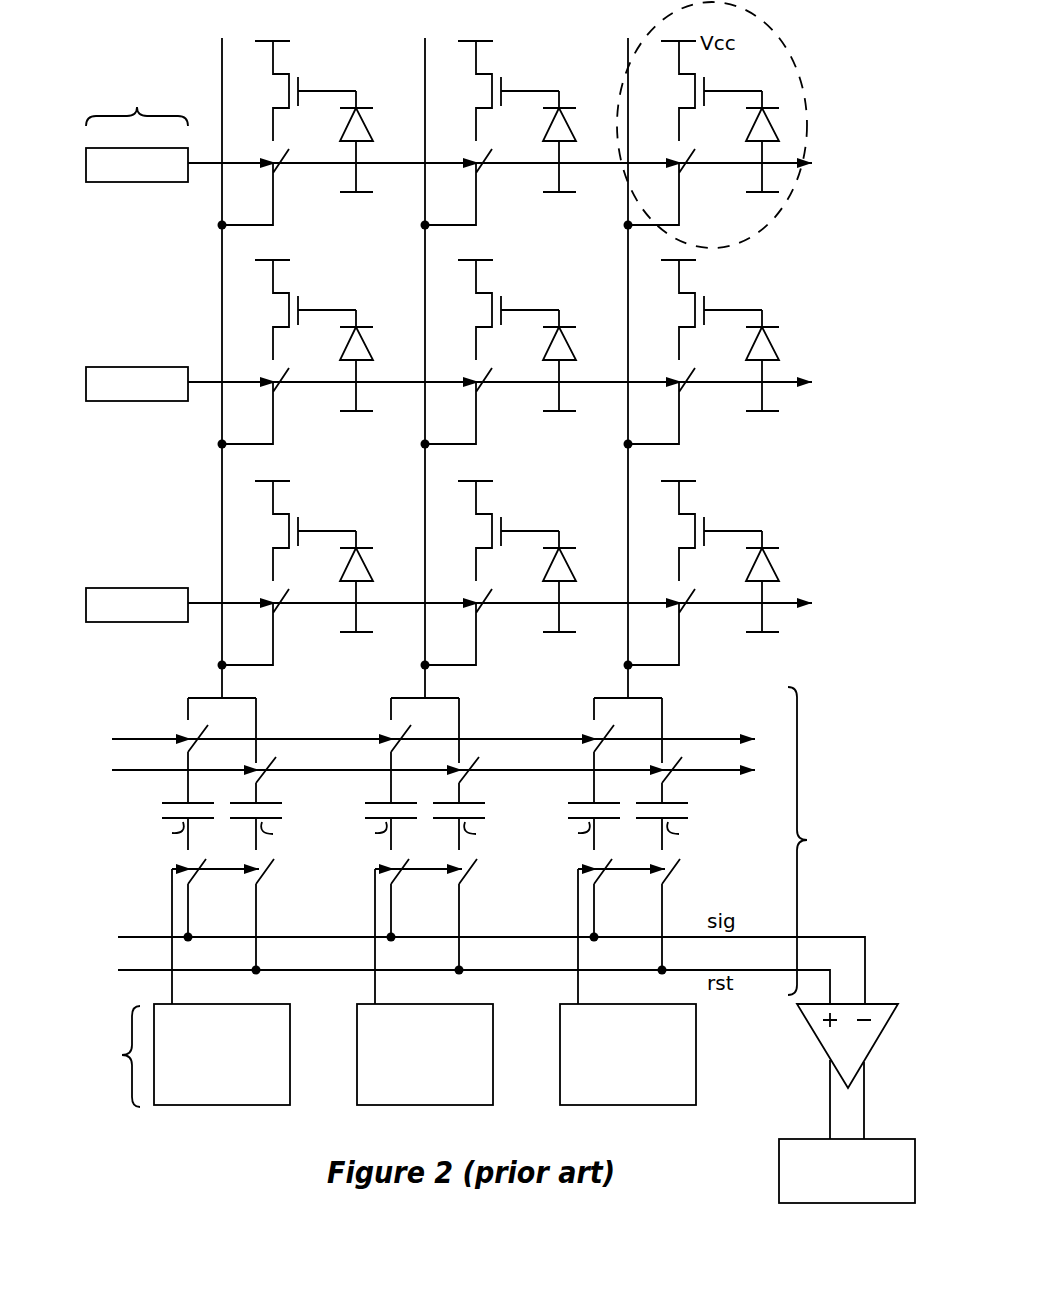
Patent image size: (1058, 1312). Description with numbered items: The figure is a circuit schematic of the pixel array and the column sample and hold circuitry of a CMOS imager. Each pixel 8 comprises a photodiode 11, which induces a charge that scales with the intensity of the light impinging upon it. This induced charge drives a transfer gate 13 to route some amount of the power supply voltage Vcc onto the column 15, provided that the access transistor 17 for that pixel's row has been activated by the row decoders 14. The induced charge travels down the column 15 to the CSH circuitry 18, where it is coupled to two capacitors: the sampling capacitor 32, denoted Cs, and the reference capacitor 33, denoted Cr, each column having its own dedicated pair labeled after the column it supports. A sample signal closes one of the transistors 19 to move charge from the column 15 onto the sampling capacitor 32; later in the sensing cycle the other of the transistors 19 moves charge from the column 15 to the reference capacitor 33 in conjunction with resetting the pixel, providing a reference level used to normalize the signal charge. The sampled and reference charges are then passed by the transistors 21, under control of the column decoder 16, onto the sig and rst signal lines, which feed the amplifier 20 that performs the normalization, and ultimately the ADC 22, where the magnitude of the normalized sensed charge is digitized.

The pixel 8 is at (719, 128).
The photodiode 11 is at (777, 125).
The transfer gate 13 is at (658, 85).
The row decoders 14 is at (137, 325).
The column 15 is at (628, 302).
The column decoder 16 is at (362, 1055).
The access transistor 17 is at (695, 168).
The CSH circuitry 18 is at (440, 841).
The transistors 19 is at (618, 708).
The amplifier 20 is at (847, 1071).
The transistors 21 is at (608, 883).
The ADC 22 is at (847, 1171).
The sampling capacitor 32 is at (177, 798).
The reference capacitor 33 is at (270, 785).